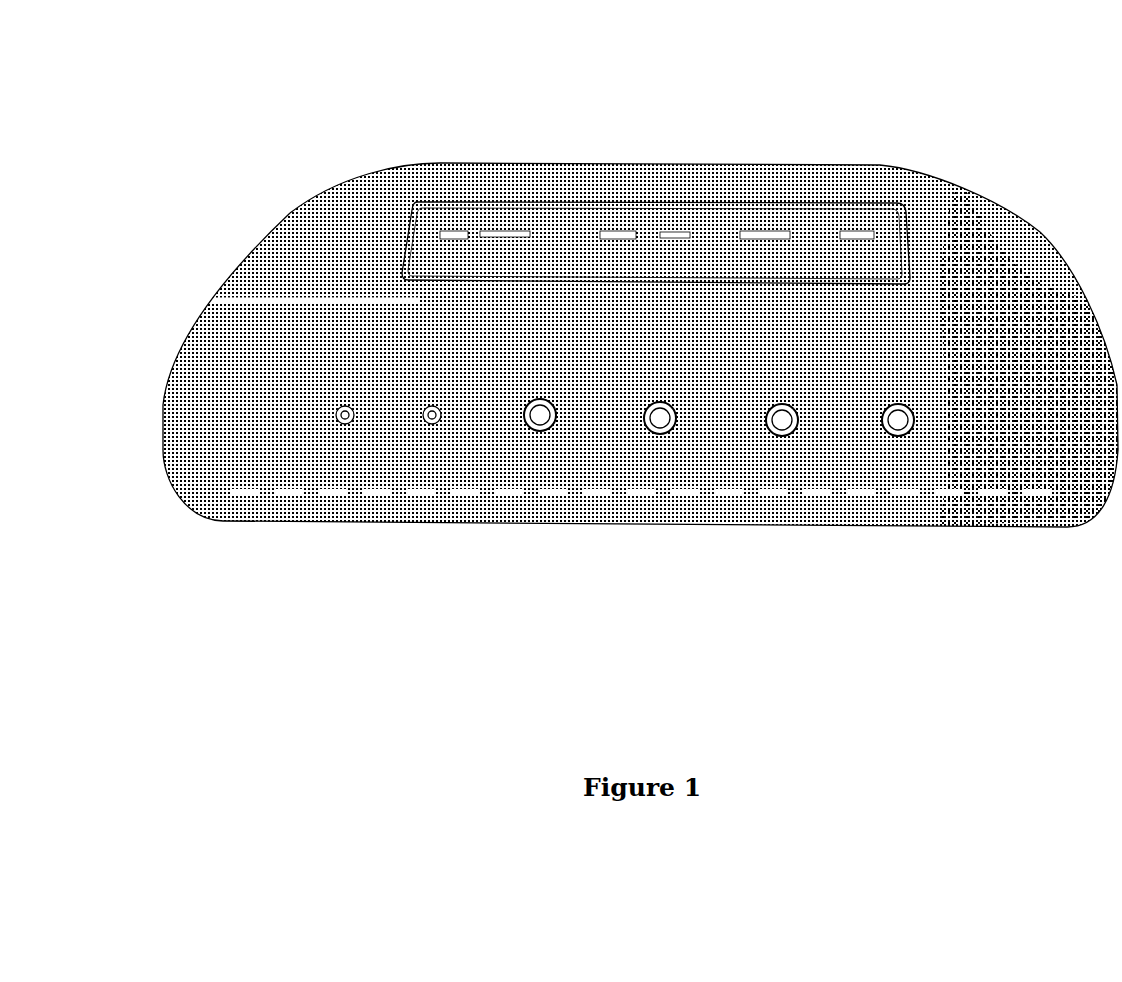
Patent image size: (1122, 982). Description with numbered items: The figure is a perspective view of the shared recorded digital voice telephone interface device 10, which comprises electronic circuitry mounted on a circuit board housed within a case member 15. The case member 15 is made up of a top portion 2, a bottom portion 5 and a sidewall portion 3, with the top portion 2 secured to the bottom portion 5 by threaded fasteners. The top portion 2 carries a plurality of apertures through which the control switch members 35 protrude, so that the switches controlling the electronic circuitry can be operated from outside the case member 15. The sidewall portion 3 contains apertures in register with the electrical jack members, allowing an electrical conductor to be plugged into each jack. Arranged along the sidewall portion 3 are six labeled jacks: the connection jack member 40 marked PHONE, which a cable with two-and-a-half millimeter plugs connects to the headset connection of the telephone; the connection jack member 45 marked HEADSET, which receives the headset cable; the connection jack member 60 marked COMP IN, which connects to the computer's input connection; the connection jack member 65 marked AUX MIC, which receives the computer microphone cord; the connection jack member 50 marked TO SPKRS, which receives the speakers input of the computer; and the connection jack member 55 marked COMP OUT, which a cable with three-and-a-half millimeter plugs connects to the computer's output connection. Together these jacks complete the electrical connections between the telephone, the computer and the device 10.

The top portion 2 is at (948, 225).
The sidewall portion 3 is at (1020, 470).
The bottom portion 5 is at (600, 528).
The SRDV telephone interface device 10 is at (222, 600).
The case member 15 is at (292, 212).
The control switch member 35 is at (835, 215).
The connection jack member marked PHONE 40 is at (345, 425).
The connection jack member marked HEADSET 45 is at (432, 425).
The connection jack member marked TO SPKRS 50 is at (782, 437).
The connection jack member marked COMP OUT 55 is at (898, 438).
The connection jack member marked COMP IN 60 is at (540, 432).
The connection jack member marked AUX MIC 65 is at (660, 435).